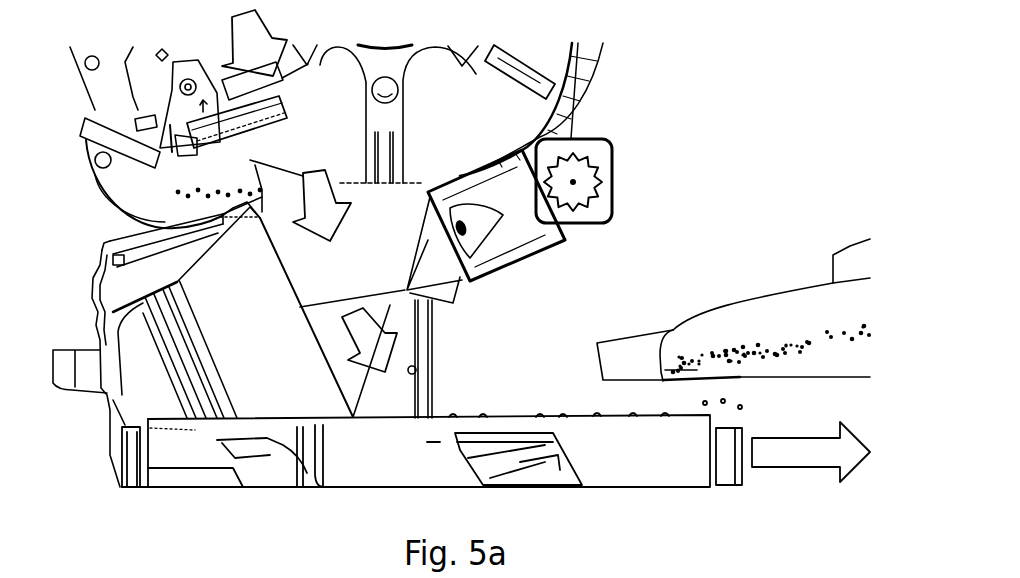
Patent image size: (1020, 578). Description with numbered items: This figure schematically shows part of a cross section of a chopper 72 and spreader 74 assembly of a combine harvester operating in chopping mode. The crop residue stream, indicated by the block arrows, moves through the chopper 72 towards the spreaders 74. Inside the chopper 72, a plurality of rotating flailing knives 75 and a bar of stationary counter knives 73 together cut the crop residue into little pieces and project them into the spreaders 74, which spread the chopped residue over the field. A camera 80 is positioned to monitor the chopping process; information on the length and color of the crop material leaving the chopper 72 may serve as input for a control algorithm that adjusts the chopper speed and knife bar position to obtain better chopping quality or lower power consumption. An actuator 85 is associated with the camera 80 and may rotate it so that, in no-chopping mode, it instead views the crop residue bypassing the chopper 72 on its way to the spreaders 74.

The chopper 72 is at (541, 51).
The bar of stationary counter knives 73 is at (295, 129).
The spreader 74 is at (356, 478).
The rotating flailing knives 75 is at (503, 88).
The camera 80 is at (518, 262).
The actuator 85 is at (617, 180).